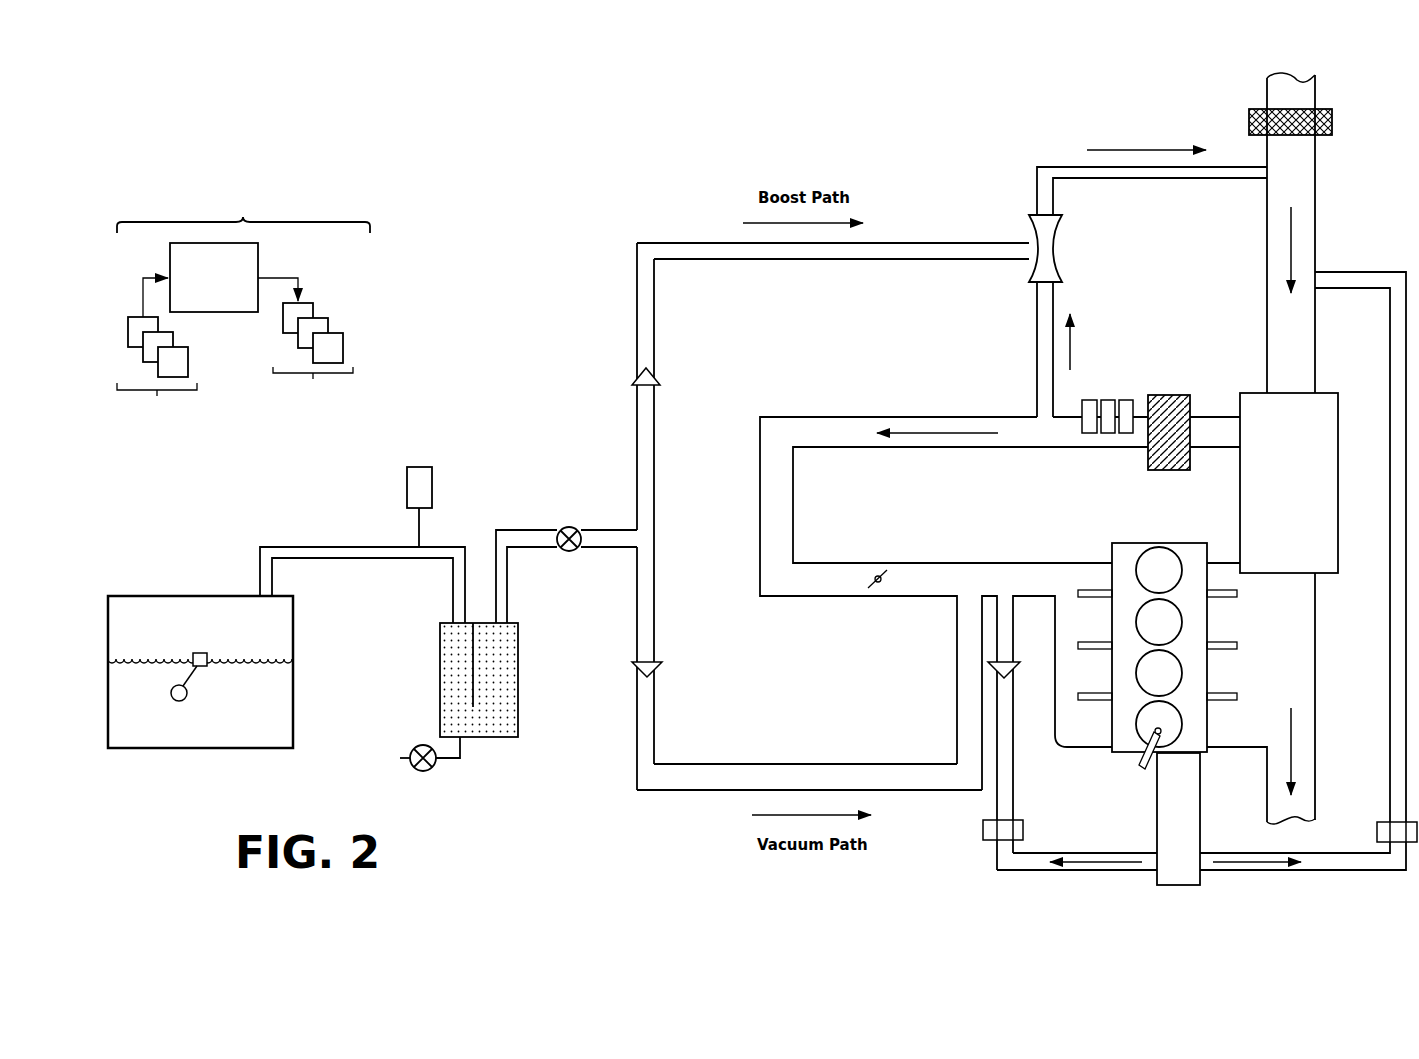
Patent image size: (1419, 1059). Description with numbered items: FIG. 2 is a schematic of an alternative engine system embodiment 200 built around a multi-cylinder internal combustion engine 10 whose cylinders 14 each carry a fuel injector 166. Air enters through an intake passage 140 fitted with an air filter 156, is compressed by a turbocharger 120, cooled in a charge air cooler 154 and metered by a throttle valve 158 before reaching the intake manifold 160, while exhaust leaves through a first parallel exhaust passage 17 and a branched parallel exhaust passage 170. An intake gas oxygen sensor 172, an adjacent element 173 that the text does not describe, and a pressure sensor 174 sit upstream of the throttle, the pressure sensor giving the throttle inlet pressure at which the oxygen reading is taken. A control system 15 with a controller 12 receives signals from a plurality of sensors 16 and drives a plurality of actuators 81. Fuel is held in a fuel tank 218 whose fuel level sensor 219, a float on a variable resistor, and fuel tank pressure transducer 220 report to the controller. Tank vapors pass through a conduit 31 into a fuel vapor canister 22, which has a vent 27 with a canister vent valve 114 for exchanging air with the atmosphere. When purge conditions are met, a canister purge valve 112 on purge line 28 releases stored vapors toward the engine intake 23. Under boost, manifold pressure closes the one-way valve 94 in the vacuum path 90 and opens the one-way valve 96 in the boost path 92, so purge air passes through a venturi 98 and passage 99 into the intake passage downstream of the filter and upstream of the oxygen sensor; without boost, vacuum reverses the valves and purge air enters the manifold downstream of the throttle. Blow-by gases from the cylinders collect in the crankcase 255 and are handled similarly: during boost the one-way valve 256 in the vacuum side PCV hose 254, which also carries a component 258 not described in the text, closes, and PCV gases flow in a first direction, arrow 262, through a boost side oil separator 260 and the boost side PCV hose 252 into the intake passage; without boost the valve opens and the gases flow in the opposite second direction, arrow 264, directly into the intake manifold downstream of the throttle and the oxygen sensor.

The embodiment 200 is at (217, 127).
The control system 15 is at (243, 203).
The controller 12 is at (220, 280).
The sensors 16 is at (157, 377).
The actuators 81 is at (313, 362).
The fuel tank 218 is at (293, 703).
The fuel level sensor 219 is at (203, 666).
The conduit 31 is at (292, 546).
The fuel tank pressure transducer 220 is at (433, 481).
The fuel vapor canister 22 is at (504, 738).
The canister vent valve 114 is at (430, 771).
The vent 27 is at (400, 758).
The purge line 28 is at (591, 530).
The canister purge valve 112 is at (575, 551).
The boost path 92 is at (800, 260).
The one-way valve 96 is at (653, 374).
The one-way valve 94 is at (655, 668).
The vacuum path 90 is at (767, 762).
The engine intake 23 is at (885, 371).
The throttle valve 158 is at (881, 583).
The venturi 98 is at (1050, 257).
The passage 99 is at (1062, 166).
The intake passage 140 is at (1265, 268).
The air filter 156 is at (1333, 118).
The boost side PCV hose 252 is at (1337, 268).
The intake gas oxygen sensor 172 is at (1090, 400).
The sensor 173 is at (1108, 400).
The pressure sensor 174 is at (1125, 400).
The charge air cooler 154 is at (1173, 395).
The turbocharger 120 is at (1289, 483).
The intake manifold 160 is at (1083, 622).
The cylinders 14 is at (1178, 565).
The engine 10 is at (1083, 758).
The fuel injector 166 is at (1133, 770).
The first parallel exhaust passage 17 is at (1315, 660).
The branched parallel exhaust passage 170 is at (1315, 818).
The vacuum side PCV hose 254 is at (1013, 768).
The one-way valve 256 is at (1013, 676).
The valve 258 is at (987, 842).
The crankcase 255 is at (1178, 819).
The arrow 262 is at (1077, 858).
The arrow 264 is at (1230, 857).
The boost side oil separator 260 is at (1375, 833).